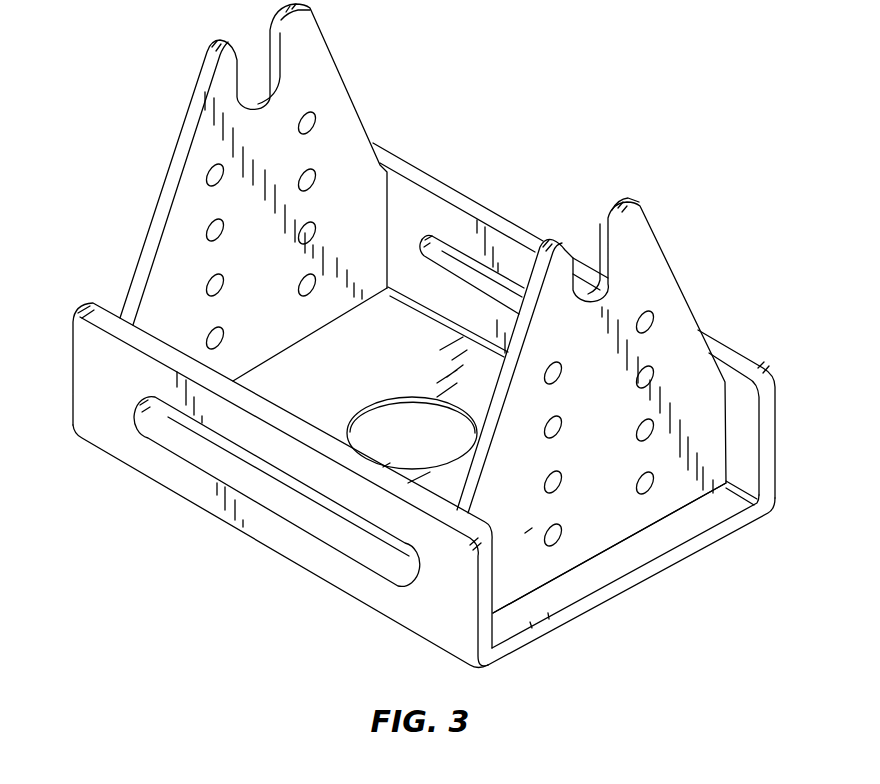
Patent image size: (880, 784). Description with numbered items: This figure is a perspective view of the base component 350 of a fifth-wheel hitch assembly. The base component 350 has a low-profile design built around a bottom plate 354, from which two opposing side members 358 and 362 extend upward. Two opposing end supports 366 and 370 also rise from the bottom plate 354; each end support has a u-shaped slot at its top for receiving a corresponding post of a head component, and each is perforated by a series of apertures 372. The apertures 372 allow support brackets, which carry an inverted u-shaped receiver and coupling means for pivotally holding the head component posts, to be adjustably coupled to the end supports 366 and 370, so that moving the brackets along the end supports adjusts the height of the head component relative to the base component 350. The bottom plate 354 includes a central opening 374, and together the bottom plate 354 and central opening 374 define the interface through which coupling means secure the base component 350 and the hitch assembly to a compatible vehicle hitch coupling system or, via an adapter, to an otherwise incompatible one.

The base component 350 is at (425, 336).
The bottom plate 354 is at (504, 476).
The side member 358 is at (210, 498).
The side member 362 is at (445, 218).
The end support 366 is at (217, 133).
The end support 370 is at (609, 405).
The apertures 372 is at (561, 381).
The central opening 374 is at (394, 421).